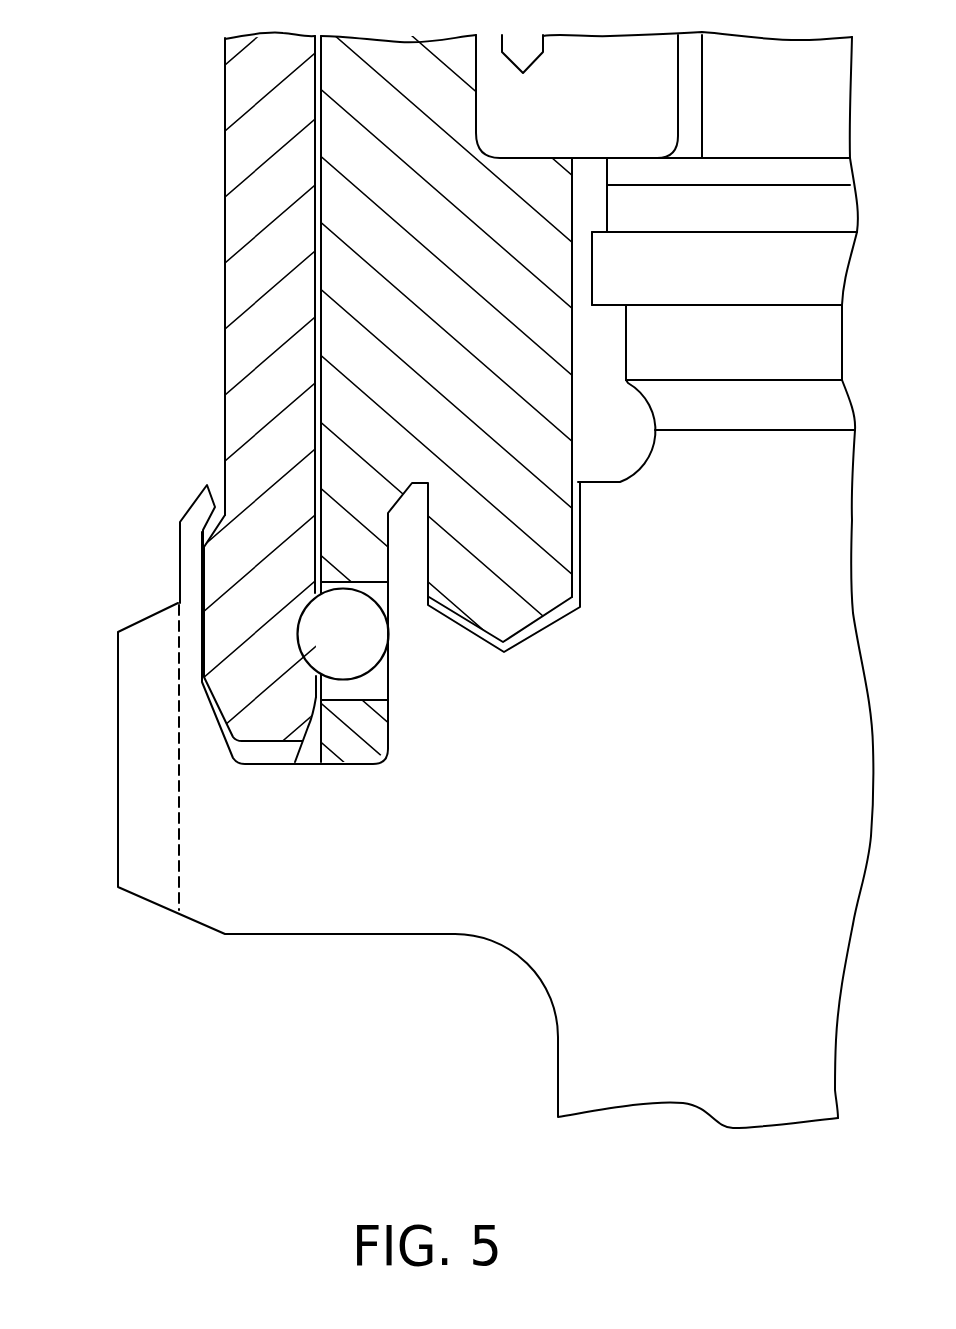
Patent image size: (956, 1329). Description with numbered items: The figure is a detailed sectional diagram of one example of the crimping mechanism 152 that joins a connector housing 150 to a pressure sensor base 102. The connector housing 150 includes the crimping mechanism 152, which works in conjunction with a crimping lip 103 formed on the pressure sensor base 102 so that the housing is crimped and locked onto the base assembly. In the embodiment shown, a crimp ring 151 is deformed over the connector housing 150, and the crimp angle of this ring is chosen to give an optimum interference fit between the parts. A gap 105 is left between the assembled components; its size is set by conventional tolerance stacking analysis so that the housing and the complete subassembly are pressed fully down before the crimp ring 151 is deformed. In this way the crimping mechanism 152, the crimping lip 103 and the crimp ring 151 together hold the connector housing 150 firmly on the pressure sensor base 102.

The connector housing 150 is at (223, 228).
The crimp ring 151 is at (180, 473).
The crimping lip 103 is at (188, 560).
The crimping mechanism 152 is at (230, 635).
The gap 105 is at (263, 753).
The pressure sensor base 102 is at (292, 918).